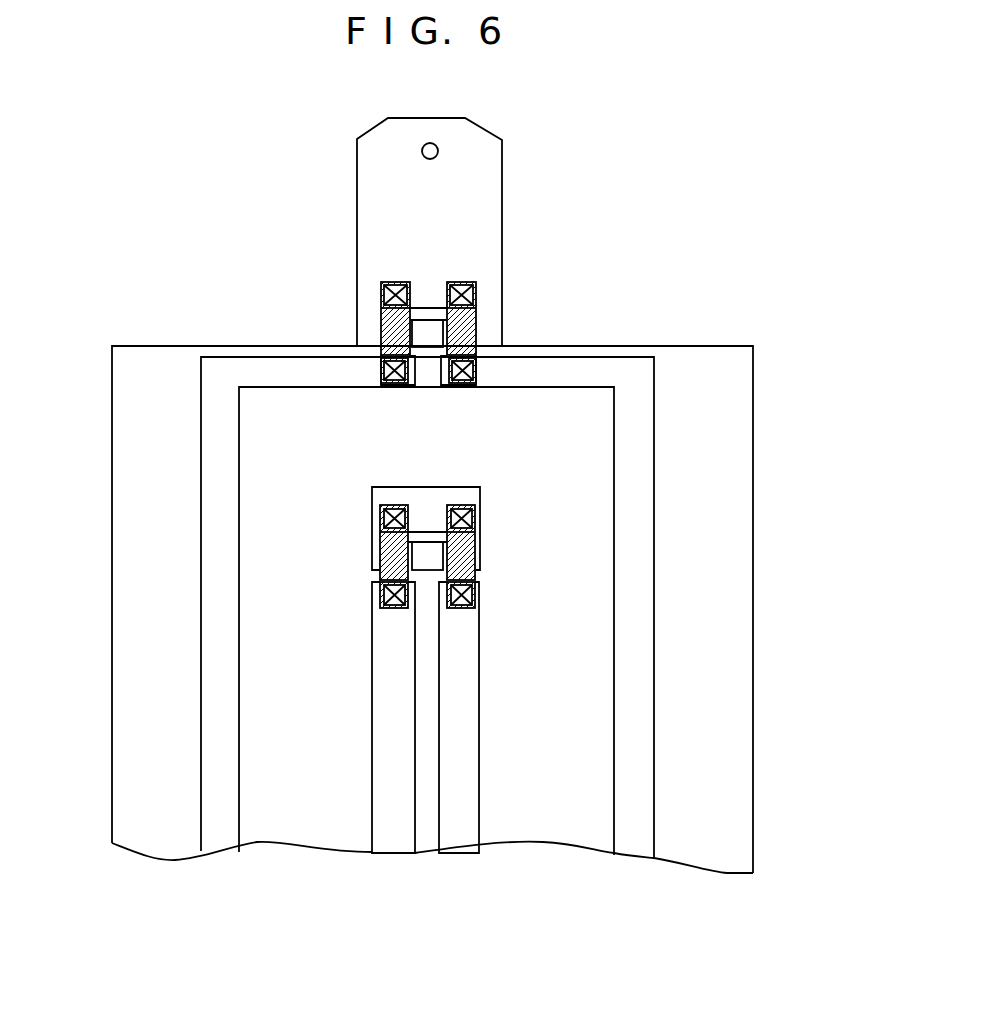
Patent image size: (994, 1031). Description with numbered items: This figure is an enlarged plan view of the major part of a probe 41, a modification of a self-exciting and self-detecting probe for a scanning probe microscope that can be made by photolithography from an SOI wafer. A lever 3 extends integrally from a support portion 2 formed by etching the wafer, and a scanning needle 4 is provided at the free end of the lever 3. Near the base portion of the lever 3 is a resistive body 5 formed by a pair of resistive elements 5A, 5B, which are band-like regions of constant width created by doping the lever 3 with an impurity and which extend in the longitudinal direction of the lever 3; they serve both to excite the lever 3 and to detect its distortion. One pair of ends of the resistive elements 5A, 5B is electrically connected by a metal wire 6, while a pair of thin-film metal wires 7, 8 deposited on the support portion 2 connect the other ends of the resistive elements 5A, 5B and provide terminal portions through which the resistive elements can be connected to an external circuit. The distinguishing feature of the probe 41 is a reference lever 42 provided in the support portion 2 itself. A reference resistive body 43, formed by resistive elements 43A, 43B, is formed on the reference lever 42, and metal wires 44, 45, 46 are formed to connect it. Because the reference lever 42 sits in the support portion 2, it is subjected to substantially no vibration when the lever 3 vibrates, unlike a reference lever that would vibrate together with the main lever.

The support portion 2 is at (742, 380).
The lever 3 is at (483, 165).
The scanning needle 4 is at (430, 143).
The resistive body 5 is at (350, 322).
The resistive element 5A is at (397, 336).
The resistive element 5B is at (462, 336).
The metal wire 6 is at (430, 287).
The metal wire 7 is at (213, 472).
The metal wire 8 is at (633, 453).
The probe 41 is at (749, 131).
The reference lever 42 is at (435, 487).
The reference resistive body 43 is at (634, 553).
The resistive element 43A is at (475, 545).
The resistive element 43B is at (475, 557).
The metal wire 44 is at (422, 512).
The metal wire 45 is at (400, 833).
The metal wire 46 is at (458, 833).